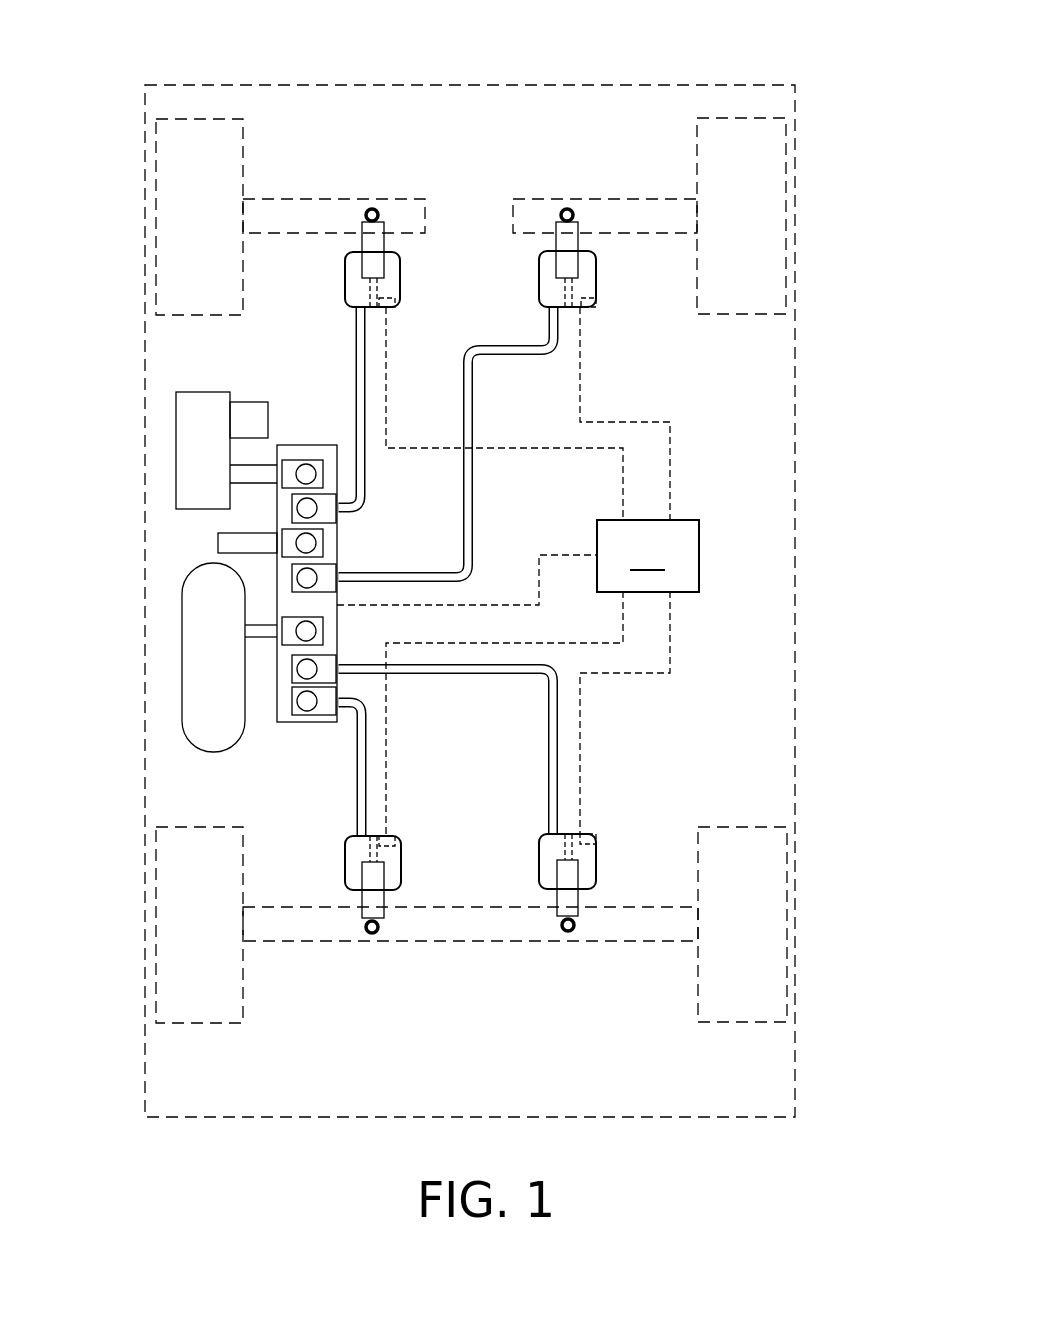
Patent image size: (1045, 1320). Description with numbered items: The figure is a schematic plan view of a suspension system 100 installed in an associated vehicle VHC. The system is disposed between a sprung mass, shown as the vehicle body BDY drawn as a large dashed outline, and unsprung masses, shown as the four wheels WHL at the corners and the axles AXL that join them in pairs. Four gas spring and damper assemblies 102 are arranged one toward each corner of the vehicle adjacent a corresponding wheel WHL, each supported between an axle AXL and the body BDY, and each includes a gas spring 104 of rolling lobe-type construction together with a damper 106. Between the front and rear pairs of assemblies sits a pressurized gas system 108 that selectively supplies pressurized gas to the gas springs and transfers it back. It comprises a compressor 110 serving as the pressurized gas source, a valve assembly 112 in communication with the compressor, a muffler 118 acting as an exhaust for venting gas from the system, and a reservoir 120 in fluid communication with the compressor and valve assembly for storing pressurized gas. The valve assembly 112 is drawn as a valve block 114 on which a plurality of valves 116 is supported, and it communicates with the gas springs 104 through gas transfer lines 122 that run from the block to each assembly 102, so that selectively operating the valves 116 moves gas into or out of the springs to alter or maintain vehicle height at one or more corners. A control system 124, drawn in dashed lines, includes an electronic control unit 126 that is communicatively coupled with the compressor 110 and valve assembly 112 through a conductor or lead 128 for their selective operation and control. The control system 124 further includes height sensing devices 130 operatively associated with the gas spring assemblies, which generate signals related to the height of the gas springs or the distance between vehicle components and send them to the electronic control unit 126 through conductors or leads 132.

The suspension system 100 is at (750, 361).
The gas spring and damper assembly 102 is at (479, 571).
The gas spring 104 is at (344, 287).
The damper 106 is at (360, 243).
The pressurized gas system 108 is at (166, 525).
The compressor 110 is at (182, 433).
The valve assembly 112 is at (345, 563).
The valve block 114 is at (310, 726).
The valves 116 is at (316, 577).
The muffler 118 is at (218, 538).
The reservoir 120 is at (194, 668).
The gas transfer lines 122 is at (366, 425).
The control system 124 is at (710, 468).
The electronic control unit 126 is at (648, 556).
The conductor or lead 128 is at (562, 553).
The height sensing devices 130 is at (397, 308).
The conductors or leads 132 is at (386, 407).
The vehicle VHC is at (875, 101).
The vehicle body BDY is at (692, 80).
The wheel WHL is at (178, 204).
The axle AXL is at (290, 208).